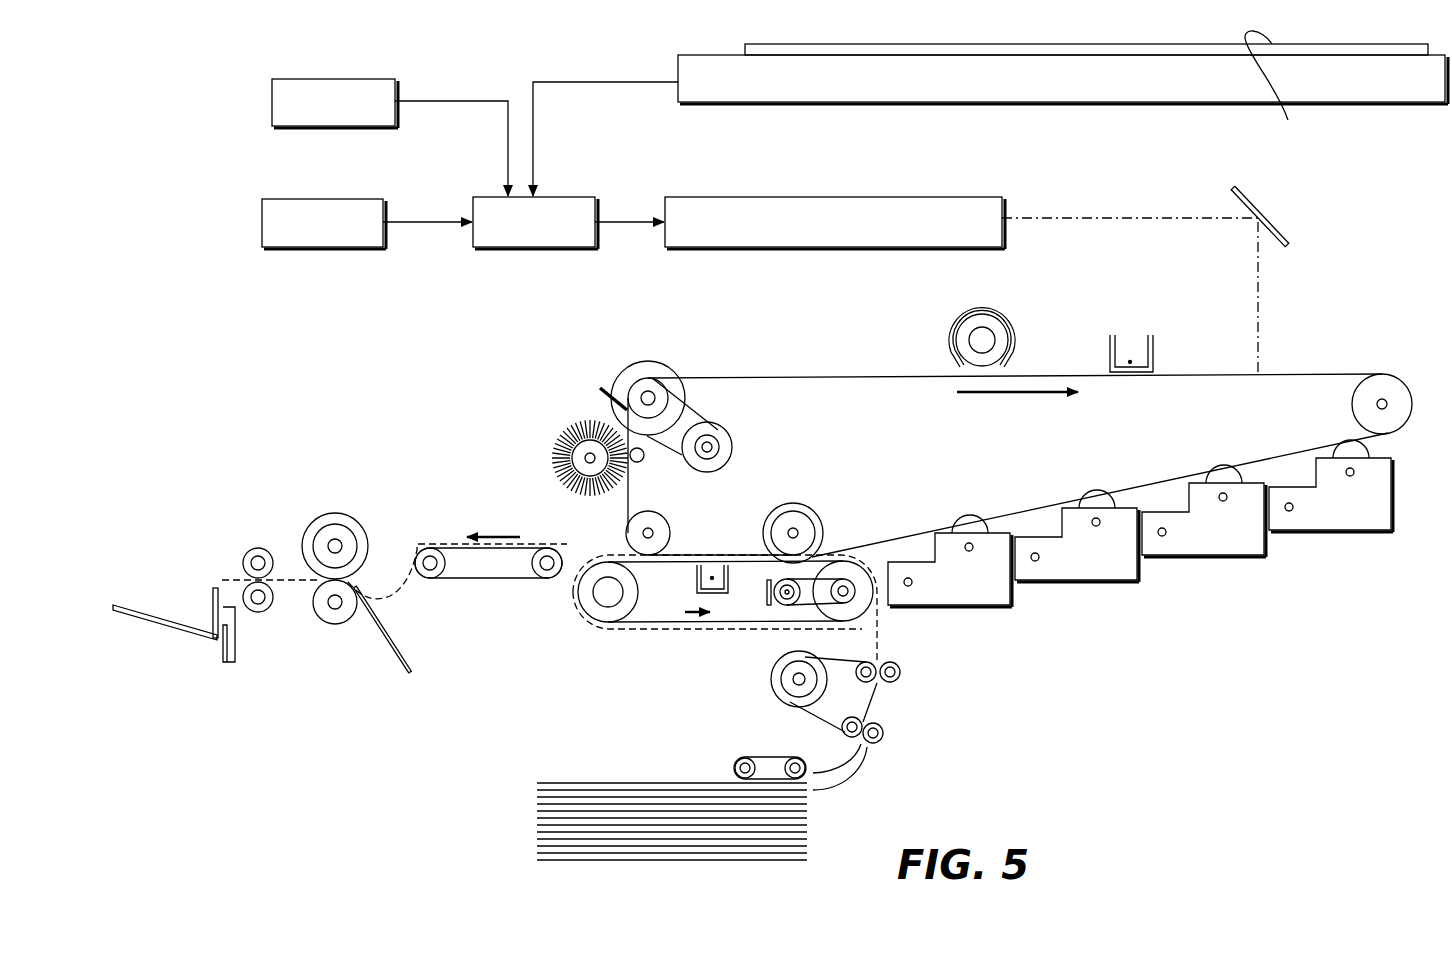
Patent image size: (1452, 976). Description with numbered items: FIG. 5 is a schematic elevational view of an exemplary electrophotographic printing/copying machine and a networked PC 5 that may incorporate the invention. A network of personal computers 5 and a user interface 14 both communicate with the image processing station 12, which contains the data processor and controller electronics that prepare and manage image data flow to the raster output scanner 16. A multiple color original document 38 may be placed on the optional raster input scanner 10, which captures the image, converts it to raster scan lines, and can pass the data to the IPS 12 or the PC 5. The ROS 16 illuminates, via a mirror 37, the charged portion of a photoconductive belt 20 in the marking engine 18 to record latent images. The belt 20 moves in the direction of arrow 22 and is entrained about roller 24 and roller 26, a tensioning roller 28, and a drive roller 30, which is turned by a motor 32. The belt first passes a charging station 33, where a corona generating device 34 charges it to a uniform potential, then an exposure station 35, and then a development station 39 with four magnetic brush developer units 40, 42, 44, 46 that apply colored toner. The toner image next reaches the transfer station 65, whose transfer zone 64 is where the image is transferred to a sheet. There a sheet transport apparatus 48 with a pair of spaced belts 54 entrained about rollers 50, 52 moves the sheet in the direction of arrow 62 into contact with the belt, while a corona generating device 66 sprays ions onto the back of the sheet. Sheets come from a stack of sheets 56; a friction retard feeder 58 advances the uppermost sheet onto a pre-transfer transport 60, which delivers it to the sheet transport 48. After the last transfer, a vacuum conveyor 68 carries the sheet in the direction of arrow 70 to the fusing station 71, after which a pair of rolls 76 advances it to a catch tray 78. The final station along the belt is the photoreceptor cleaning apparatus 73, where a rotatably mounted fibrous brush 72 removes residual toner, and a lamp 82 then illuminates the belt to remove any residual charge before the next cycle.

The personal computer 5 is at (243, 97).
The raster input scanner 10 is at (659, 67).
The image processing station 12 is at (597, 185).
The user interface 14 is at (258, 185).
The raster output scanner 16 is at (876, 184).
The marking engine 18 is at (1424, 158).
The photoconductive belt 20 is at (1070, 376).
The arrow 22 is at (1037, 395).
The roller 24 is at (662, 522).
The roller 26 is at (815, 521).
The tensioning roller 28 is at (1385, 392).
The drive roller 30 is at (630, 375).
The motor 32 is at (733, 442).
The charging station 33 is at (1171, 325).
The corona generating device 34 is at (1142, 334).
The exposure station 35 is at (1277, 362).
The mirror 37 is at (1298, 230).
The original document 38 is at (1274, 88).
The development station 39 is at (1140, 558).
The developer unit 40 is at (1353, 523).
The developer unit 42 is at (1220, 546).
The developer unit 44 is at (1092, 573).
The developer unit 46 is at (967, 598).
The sheet transport apparatus 48 is at (748, 607).
The roller 50 is at (603, 613).
The transfer belt roller 52 is at (848, 599).
The belts 54 is at (625, 567).
The stack of sheets 56 is at (560, 790).
The friction retard feeder 58 is at (772, 756).
The pre-transfer transport 60 is at (873, 703).
The arrow 62 is at (702, 618).
The transfer zone 64 is at (721, 540).
The transfer station 65 is at (739, 570).
The corona generating device 66 is at (697, 584).
The vacuum conveyor 68 is at (490, 583).
The arrow 70 is at (495, 535).
The fusing station 71 is at (330, 509).
The fibrous brush 72 is at (565, 440).
The photoreceptor cleaning apparatus 73 is at (572, 400).
The rolls 76 is at (262, 547).
The catch tray 78 is at (175, 627).
The lamp 82 is at (953, 341).